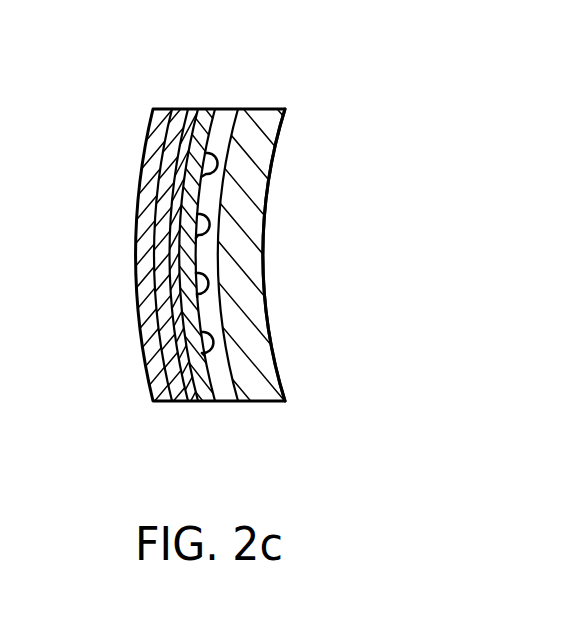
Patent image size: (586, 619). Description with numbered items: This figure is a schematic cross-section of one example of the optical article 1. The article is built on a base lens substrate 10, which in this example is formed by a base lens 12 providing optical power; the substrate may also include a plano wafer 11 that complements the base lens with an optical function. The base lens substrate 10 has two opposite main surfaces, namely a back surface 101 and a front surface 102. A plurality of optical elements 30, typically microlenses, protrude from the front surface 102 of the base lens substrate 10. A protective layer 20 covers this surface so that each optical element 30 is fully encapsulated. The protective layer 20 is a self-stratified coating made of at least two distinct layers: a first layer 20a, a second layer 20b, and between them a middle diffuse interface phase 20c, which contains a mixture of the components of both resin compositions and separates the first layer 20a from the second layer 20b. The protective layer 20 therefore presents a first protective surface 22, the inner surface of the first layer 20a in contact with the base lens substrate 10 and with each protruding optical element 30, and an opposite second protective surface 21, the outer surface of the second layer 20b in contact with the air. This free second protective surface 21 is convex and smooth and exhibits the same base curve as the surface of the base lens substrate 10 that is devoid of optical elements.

The optical article 1 is at (293, 309).
The base lens substrate 10 is at (293, 309).
The plano wafer 11 is at (222, 380).
The base lens 12 is at (250, 173).
The protective layer 20 is at (273, 309).
The first layer L_SSC1 20a is at (273, 309).
The second layer L_SSC2 20b is at (158, 384).
The middle diffuse interface phase 20c is at (183, 387).
The second protective surface 21 is at (129, 371).
The first protective surface 22 is at (230, 370).
The optical element 30 is at (193, 213).
The back surface 101 is at (278, 299).
The front surface 102 is at (183, 250).